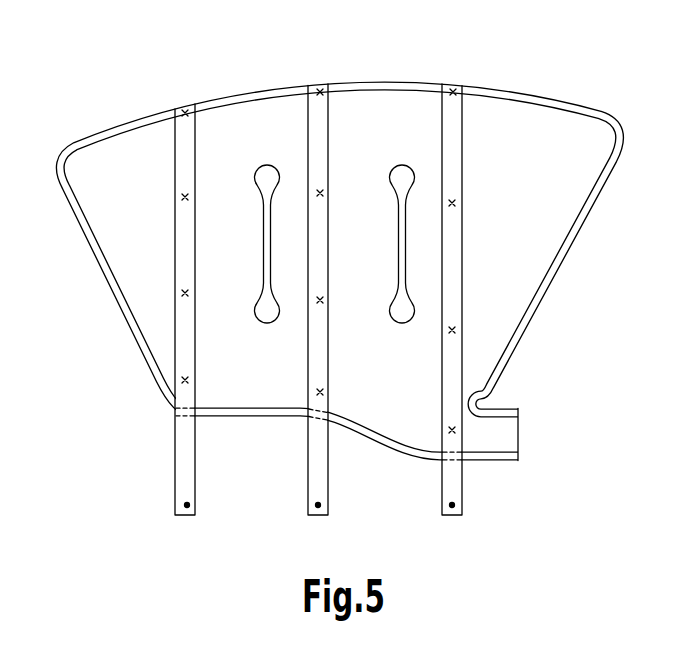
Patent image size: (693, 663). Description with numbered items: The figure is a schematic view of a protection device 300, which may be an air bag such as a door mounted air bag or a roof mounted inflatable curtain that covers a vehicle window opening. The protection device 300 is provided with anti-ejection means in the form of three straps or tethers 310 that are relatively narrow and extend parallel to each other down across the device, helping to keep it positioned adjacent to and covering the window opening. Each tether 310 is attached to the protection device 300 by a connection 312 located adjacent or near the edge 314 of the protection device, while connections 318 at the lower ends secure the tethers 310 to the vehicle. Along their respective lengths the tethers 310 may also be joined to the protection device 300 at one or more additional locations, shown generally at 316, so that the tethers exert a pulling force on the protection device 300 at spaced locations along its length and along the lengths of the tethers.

The protection device 300 is at (267, 128).
The tethers 310 is at (174, 247).
The connections 312 is at (180, 112).
The edge 314 is at (543, 100).
The additional connection locations 316 is at (325, 191).
The connections 318 is at (317, 505).